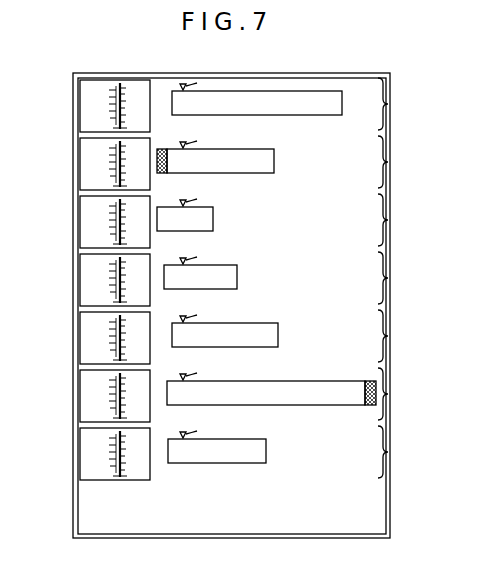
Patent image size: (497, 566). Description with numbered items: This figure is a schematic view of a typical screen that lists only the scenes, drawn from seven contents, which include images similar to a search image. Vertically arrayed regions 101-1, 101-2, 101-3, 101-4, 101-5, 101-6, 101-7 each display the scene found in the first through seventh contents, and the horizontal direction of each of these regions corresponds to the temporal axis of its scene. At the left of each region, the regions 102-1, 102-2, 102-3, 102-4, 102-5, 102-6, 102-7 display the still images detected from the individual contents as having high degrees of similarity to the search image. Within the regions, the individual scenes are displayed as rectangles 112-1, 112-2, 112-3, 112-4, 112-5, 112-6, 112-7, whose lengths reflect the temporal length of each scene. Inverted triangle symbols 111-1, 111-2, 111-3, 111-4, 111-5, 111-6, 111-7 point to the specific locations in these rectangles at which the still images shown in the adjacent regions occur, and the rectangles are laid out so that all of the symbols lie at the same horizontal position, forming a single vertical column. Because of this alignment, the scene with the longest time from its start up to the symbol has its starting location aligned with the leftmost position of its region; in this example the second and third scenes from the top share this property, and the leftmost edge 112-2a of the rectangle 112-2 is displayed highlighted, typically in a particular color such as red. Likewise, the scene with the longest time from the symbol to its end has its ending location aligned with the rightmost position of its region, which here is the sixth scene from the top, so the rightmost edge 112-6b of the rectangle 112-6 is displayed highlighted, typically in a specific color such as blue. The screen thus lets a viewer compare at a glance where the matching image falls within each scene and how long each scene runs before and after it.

The region 101-1 is at (388, 104).
The region 101-2 is at (388, 162).
The region 101-3 is at (388, 220).
The region 101-4 is at (388, 278).
The region 101-5 is at (388, 336).
The region 101-6 is at (388, 394).
The region 101-7 is at (388, 452).
The region 102-1 is at (80, 106).
The region 102-2 is at (80, 164).
The region 102-3 is at (80, 222).
The region 102-4 is at (80, 280).
The region 102-5 is at (80, 338).
The region 102-6 is at (80, 396).
The region 102-7 is at (80, 454).
The inverted triangle symbol 111-1 is at (208, 85).
The inverted triangle symbol 111-2 is at (208, 143).
The inverted triangle symbol 111-3 is at (208, 201).
The inverted triangle symbol 111-4 is at (208, 259).
The inverted triangle symbol 111-5 is at (208, 317).
The inverted triangle symbol 111-6 is at (208, 375).
The inverted triangle symbol 111-7 is at (208, 433).
The rectangle 112-1 is at (342, 103).
The rectangle 112-2 is at (274, 161).
The leftmost edge 112-2a is at (160, 148).
The rectangle 112-3 is at (213, 219).
The rectangle 112-4 is at (237, 277).
The rectangle 112-5 is at (278, 335).
The rectangle 112-6 is at (372, 405).
The rightmost edge 112-6b is at (368, 380).
The rectangle 112-7 is at (266, 451).